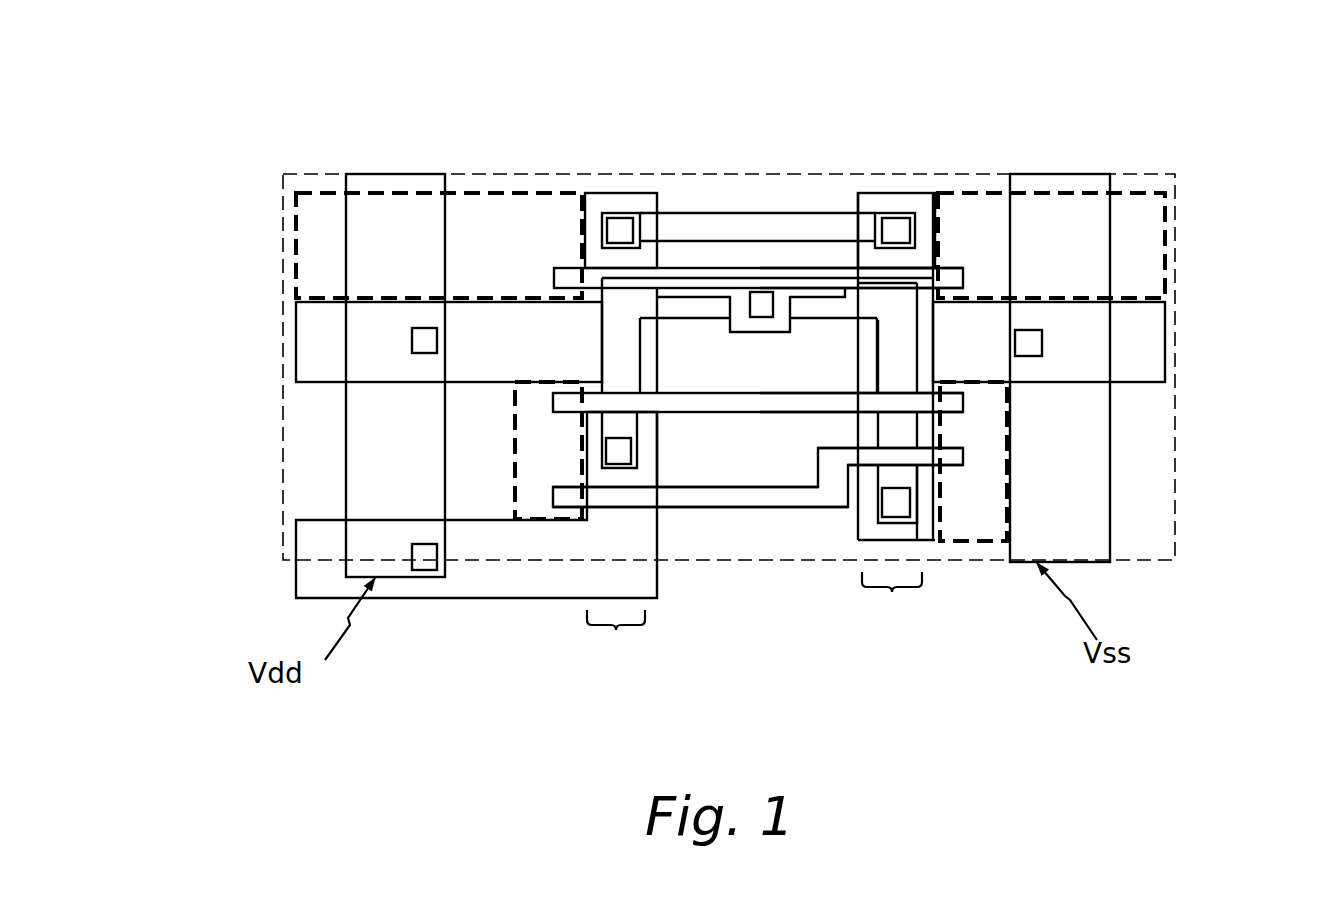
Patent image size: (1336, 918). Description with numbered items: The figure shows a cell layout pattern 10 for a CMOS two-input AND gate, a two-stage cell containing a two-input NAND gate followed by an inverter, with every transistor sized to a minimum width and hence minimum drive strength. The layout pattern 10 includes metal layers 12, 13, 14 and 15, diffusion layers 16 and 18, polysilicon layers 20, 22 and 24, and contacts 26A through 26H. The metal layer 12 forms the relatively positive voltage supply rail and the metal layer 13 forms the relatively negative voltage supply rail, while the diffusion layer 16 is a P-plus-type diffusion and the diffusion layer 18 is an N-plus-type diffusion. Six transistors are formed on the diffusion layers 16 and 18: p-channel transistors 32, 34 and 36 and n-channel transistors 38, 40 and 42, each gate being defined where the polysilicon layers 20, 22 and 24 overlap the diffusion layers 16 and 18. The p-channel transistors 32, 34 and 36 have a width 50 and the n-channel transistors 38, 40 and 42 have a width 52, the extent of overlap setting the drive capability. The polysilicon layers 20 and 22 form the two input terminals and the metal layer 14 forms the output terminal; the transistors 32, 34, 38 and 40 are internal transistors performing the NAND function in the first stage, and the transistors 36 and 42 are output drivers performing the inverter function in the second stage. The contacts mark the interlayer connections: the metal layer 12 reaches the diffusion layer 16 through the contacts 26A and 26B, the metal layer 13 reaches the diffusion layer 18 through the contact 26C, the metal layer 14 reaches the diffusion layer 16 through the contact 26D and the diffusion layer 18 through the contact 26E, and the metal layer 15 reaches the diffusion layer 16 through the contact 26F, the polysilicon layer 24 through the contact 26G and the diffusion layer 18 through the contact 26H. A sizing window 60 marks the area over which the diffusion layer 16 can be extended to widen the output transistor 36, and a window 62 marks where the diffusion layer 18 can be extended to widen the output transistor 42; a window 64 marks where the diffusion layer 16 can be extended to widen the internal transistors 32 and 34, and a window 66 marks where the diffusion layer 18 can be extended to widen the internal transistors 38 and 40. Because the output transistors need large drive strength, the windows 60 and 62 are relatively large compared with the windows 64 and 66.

The layout pattern 10 is at (721, 286).
The metal layer 12 is at (386, 331).
The metal layer 13 is at (1118, 316).
The metal layer 14 is at (757, 185).
The metal layer 15 is at (758, 352).
The diffusion layer 16 is at (476, 440).
The diffusion layer 18 is at (939, 403).
The polysilicon layer 20 is at (758, 505).
The polysilicon layer 22 is at (767, 382).
The polysilicon layer 24 is at (751, 333).
The contact 26A is at (393, 338).
The contact 26B is at (420, 572).
The contact 26C is at (1122, 340).
The contact 26D is at (572, 174).
The contact 26E is at (917, 232).
The contact 26F is at (667, 440).
The contact 26G is at (773, 305).
The contact 26H is at (912, 503).
The p-channel transistor 32 is at (700, 479).
The p-channel transistor 34 is at (758, 383).
The p-channel transistor 36 is at (758, 265).
The n-channel transistor 38 is at (869, 438).
The n-channel transistor 40 is at (861, 383).
The n-channel transistor 42 is at (861, 265).
The width 50 is at (616, 634).
The width 52 is at (892, 597).
The sizing window 60 is at (654, 184).
The window 62 is at (896, 195).
The window 64 is at (548, 380).
The window 66 is at (903, 318).